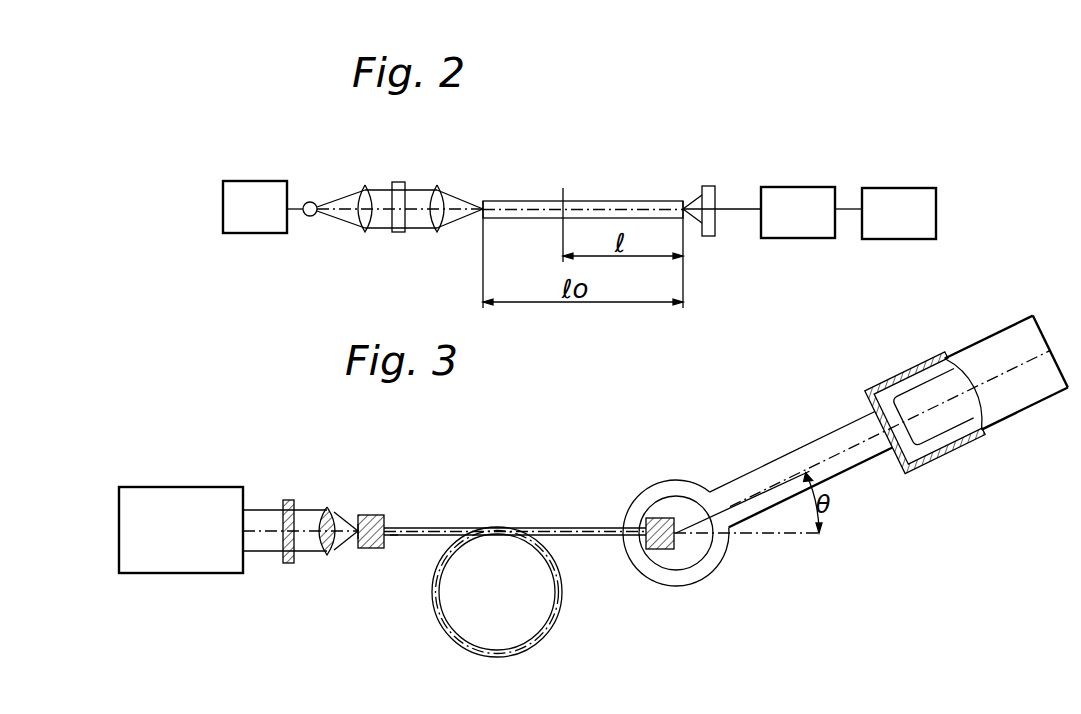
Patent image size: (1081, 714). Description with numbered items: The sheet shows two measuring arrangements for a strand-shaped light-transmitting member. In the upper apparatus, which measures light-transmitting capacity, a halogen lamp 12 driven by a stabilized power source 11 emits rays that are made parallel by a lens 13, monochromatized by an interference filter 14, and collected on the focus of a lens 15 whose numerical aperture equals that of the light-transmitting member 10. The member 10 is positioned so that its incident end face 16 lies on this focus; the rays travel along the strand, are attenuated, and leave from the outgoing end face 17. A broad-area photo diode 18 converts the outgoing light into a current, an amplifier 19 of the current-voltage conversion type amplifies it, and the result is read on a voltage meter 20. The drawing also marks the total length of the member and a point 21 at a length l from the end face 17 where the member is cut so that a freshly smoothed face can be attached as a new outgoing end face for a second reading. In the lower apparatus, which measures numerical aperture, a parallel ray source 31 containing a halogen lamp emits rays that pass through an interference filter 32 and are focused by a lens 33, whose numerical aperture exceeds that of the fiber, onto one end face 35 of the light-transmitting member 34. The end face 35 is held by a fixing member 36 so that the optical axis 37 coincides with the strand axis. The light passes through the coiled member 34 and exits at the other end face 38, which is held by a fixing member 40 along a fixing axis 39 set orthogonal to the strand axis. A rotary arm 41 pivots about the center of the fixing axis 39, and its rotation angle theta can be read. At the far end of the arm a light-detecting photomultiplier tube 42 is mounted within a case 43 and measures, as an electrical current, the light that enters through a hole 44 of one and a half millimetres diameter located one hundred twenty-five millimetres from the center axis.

In FIG. 2, the light-transmitting member 10 is at (622, 200).
In FIG. 2, the stabilized power source 11 is at (250, 233).
In FIG. 2, the halogen lamp 12 is at (310, 201).
In FIG. 2, the lens 13 is at (365, 185).
In FIG. 2, the interference filter 14 is at (399, 182).
In FIG. 2, the lens 15 is at (445, 190).
In FIG. 2, the incident end face 16 is at (478, 214).
In FIG. 2, the outgoing end face 17 is at (688, 205).
In FIG. 2, the photo diode 18 is at (708, 186).
In FIG. 2, the amplifier 19 is at (800, 187).
In FIG. 2, the voltage meter 20 is at (893, 188).
In FIG. 2, the cutting point 21 is at (563, 188).
In FIG. 3, the parallel ray source 31 is at (183, 487).
In FIG. 3, the interference filter 32 is at (291, 500).
In FIG. 3, the lens 33 is at (333, 507).
In FIG. 3, the light-transmitting member 34 is at (440, 528).
In FIG. 3, the end face 35 is at (357, 541).
In FIG. 3, the fixing member 36 is at (375, 548).
In FIG. 3, the optical axis 37 is at (395, 540).
In FIG. 3, the end face 38 is at (680, 552).
In FIG. 3, the fixing axis 39 is at (700, 543).
In FIG. 3, the fixing member 40 is at (652, 515).
In FIG. 3, the rotary arm 41 is at (784, 434).
In FIG. 3, the photomultiplier tube 42 is at (1013, 397).
In FIG. 3, the case 43 is at (940, 443).
In FIG. 3, the hole 44 is at (933, 442).